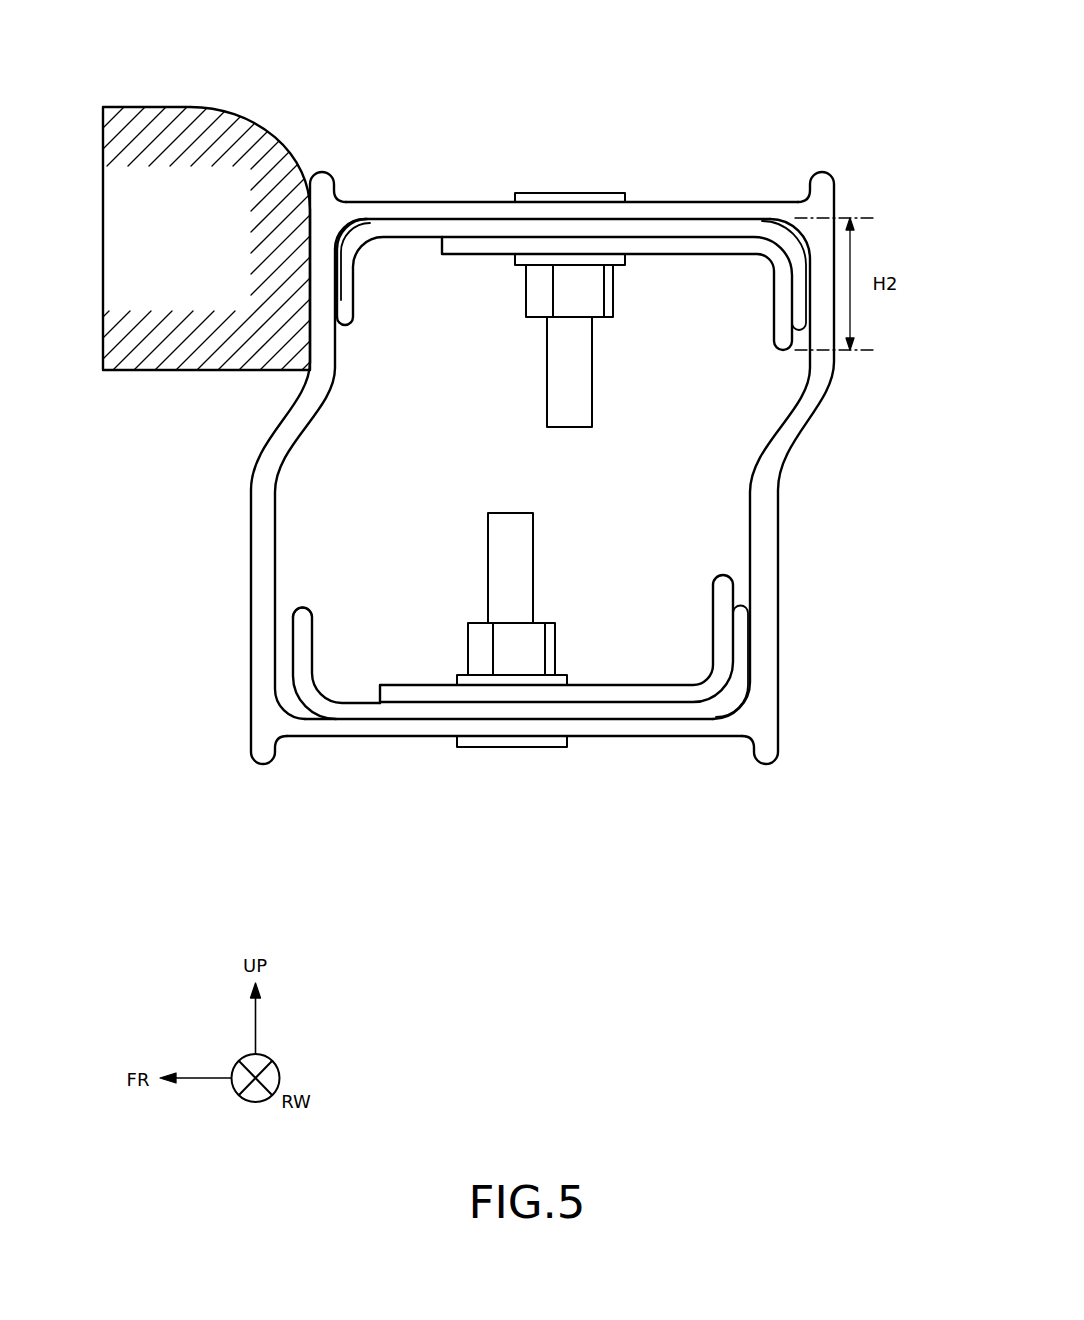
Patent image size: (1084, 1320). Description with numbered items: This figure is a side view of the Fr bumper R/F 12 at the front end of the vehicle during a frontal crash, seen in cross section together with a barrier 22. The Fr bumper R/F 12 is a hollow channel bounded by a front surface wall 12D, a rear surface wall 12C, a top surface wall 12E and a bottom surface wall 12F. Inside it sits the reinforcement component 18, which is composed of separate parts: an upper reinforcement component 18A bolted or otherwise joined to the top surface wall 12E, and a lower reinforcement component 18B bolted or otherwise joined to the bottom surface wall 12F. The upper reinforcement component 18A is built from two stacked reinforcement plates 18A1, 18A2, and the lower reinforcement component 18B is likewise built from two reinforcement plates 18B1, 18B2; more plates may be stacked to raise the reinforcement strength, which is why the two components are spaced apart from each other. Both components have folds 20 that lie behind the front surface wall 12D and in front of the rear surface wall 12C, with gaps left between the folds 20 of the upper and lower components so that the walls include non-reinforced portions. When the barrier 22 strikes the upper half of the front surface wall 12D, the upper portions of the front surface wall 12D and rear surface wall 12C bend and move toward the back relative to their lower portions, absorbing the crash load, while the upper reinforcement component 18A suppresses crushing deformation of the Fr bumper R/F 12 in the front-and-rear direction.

The Fr bumper R/F 12 is at (536, 439).
The rear surface wall 12C is at (767, 552).
The front surface wall 12D is at (265, 514).
The top surface wall 12E is at (443, 206).
The bottom surface wall 12F is at (604, 734).
The reinforcement component 18 is at (469, 411).
The upper reinforcement component 18A is at (564, 320).
The reinforcement plate 18A1 is at (427, 231).
The reinforcement plate 18A2 is at (466, 248).
The lower reinforcement component 18B is at (513, 599).
The reinforcement plate 18B1 is at (363, 712).
The reinforcement plate 18B2 is at (423, 694).
The folds 20 is at (347, 303).
The barrier 22 is at (190, 106).